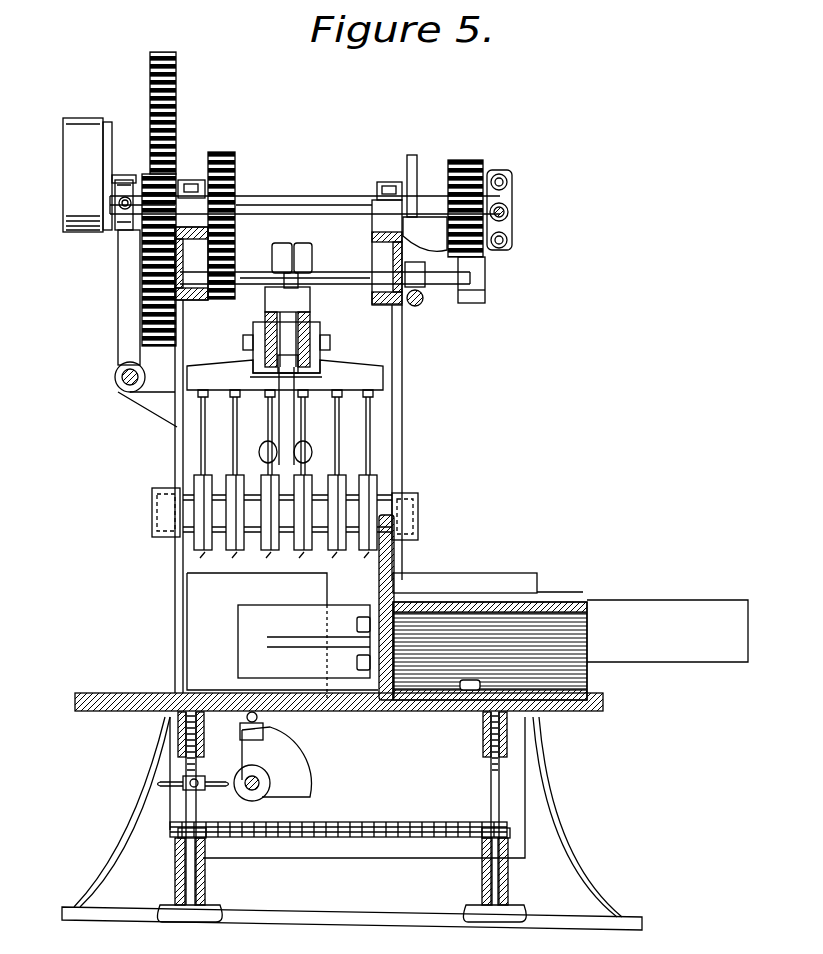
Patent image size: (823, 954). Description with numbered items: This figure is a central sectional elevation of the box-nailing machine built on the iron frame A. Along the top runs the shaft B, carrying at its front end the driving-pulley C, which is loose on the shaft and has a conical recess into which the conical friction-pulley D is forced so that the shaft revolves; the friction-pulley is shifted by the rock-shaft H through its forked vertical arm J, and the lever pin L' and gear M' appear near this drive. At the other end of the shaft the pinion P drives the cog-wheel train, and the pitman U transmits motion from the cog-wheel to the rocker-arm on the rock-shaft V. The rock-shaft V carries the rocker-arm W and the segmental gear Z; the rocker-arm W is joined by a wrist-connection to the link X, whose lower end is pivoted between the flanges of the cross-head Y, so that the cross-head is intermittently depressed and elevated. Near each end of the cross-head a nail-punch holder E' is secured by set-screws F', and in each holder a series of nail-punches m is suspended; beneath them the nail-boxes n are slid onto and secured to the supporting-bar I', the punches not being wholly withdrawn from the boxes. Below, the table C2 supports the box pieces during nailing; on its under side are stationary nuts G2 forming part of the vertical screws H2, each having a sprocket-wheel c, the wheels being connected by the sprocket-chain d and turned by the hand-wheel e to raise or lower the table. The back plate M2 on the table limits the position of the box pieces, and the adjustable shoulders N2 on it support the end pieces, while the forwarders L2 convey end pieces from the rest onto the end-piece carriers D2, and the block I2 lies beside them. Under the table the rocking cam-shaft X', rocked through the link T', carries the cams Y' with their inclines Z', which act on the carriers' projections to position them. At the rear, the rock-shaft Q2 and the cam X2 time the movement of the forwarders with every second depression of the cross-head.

The frame A is at (352, 555).
The shaft B is at (305, 196).
The large gear wheel M' is at (159, 187).
The driving-pulley C is at (87, 175).
The conical friction-pulley D is at (134, 195).
The lever pin L' is at (125, 159).
The segmental gear Z is at (227, 225).
The vertical arm J is at (147, 328).
The rock-shaft H is at (122, 380).
The cam X2 is at (412, 160).
The pinion P is at (468, 199).
The pitman U is at (507, 210).
The link T' is at (479, 278).
The rock-shaft Q2 is at (421, 302).
The rock-shaft V is at (325, 269).
The rocker-arm W is at (300, 263).
The link X is at (287, 327).
The set-screws F' is at (284, 347).
The cross-head Y is at (288, 363).
The nail-punch holder E' is at (285, 375).
The nail-punches m is at (288, 421).
The supporting-bar I' is at (285, 512).
The nail-boxes n is at (280, 561).
The end-piece carriers D2 is at (282, 631).
The shoulders or supports N2 is at (304, 652).
The back plate M2 is at (383, 607).
The block I2 is at (490, 651).
The forwarders L2 is at (570, 617).
The table C2 is at (605, 705).
The stationary nuts G2 is at (345, 808).
The vertical screws H2 is at (341, 854).
The hand-wheel e is at (193, 775).
The cams Y' is at (275, 754).
The inclines Z' is at (276, 762).
The rocking cam-shaft X' is at (252, 791).
The sprocket-chain d is at (338, 821).
The sprocket-wheel c is at (176, 830).